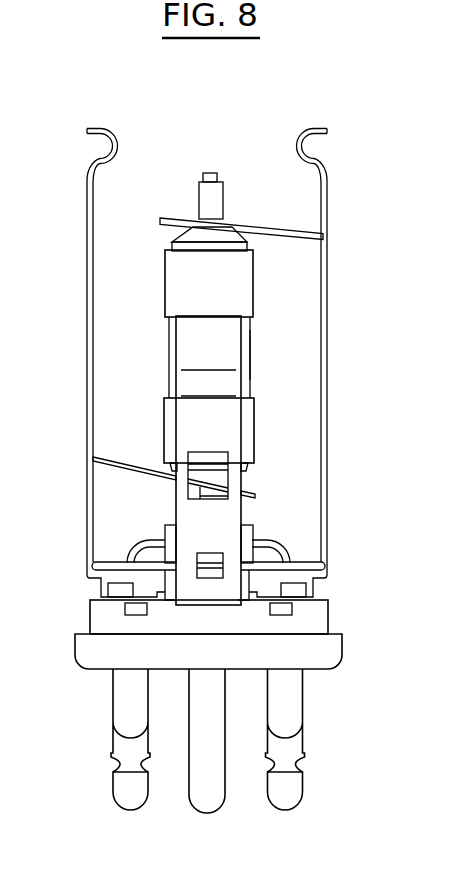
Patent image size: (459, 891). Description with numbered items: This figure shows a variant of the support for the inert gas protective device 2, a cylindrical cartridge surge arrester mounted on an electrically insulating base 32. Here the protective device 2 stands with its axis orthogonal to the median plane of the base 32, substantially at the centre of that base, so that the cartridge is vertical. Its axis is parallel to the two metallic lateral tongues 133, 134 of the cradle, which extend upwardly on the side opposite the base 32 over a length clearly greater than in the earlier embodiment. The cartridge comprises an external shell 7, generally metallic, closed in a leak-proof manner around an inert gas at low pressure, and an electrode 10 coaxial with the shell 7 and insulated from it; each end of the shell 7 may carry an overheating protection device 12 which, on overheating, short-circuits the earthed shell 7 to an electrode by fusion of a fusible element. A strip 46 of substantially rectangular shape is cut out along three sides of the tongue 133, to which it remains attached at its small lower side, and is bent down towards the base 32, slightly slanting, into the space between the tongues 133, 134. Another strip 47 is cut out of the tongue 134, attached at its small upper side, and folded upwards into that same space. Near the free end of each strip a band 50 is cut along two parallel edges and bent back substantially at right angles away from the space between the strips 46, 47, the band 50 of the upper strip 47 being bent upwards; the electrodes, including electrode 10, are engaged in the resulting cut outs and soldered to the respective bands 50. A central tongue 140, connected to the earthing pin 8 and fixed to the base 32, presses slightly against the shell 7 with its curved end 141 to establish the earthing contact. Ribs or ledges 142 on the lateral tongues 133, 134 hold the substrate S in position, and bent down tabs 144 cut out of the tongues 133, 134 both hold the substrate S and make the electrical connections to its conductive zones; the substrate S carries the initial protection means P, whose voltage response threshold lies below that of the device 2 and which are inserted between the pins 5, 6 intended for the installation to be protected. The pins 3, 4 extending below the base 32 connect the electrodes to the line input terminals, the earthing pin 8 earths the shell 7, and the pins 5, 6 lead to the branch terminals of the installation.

The protective device 2 is at (265, 348).
The pin 3 is at (127, 788).
The pin 4 is at (288, 790).
The pin 5 is at (132, 708).
The pin 6 is at (288, 712).
The external shell 7 is at (250, 338).
The earthing pin 8 is at (203, 798).
The electrode 10 is at (209, 172).
The overheating protection device 12 is at (248, 282).
The base 32 is at (105, 618).
The strip 46 is at (130, 472).
The strip 47 is at (274, 228).
The band 50 is at (204, 207).
The lateral tongue 133 is at (87, 408).
The lateral tongue 134 is at (327, 412).
The central tongue 140 is at (222, 435).
The curved end 141 is at (195, 345).
The ribs or ledges 142 is at (91, 577).
The bent down tab 144 is at (117, 560).
The initial protection means P is at (150, 523).
The substrate S is at (268, 566).